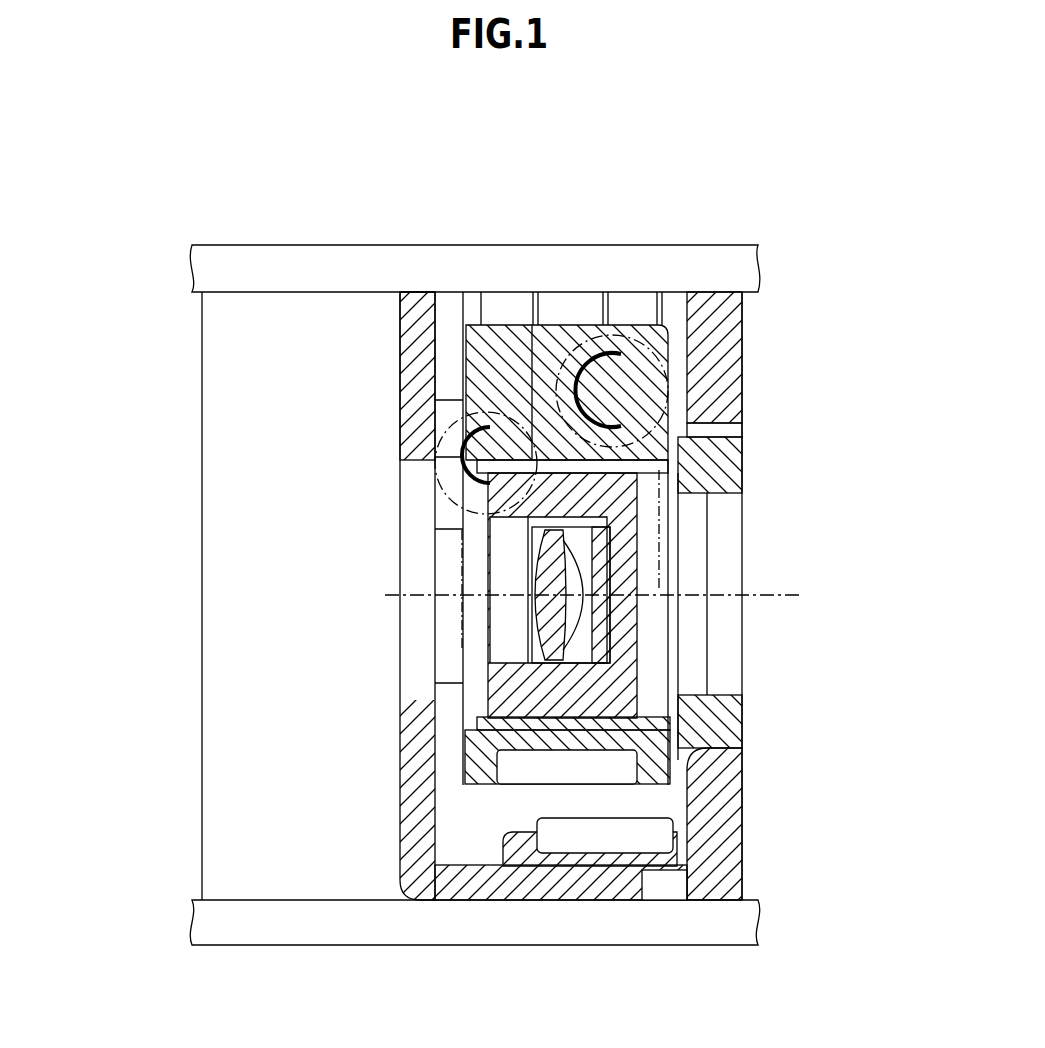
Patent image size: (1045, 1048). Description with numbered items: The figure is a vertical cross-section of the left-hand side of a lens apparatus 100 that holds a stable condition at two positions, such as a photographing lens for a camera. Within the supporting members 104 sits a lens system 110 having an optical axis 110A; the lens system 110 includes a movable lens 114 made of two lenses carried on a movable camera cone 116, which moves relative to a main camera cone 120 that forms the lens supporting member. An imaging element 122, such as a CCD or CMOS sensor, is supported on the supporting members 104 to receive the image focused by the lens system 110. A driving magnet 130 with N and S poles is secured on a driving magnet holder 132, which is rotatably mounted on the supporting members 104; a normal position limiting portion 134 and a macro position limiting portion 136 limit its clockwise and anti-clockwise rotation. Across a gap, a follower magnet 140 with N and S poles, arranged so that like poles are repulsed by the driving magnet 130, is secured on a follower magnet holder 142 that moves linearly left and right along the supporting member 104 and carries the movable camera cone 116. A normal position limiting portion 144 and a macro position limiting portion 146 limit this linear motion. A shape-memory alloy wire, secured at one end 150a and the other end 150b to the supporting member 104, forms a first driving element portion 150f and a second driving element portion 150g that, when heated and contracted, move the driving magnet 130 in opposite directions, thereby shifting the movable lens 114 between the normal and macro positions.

The lens apparatus 100 is at (778, 284).
The supporting members 104 is at (628, 258).
The lens system 110 is at (625, 582).
The optical axis 110A is at (790, 595).
The movable lens 114 is at (690, 505).
The movable camera cone 116 is at (714, 440).
The main camera cone 120 is at (583, 887).
The imaging element 122 is at (296, 348).
The driving magnet 130 is at (612, 837).
The driving magnet holder 132 is at (528, 843).
The normal position limiting portion 134 is at (688, 862).
The macro position limiting portion 136 is at (430, 845).
The follower magnet 140 is at (587, 760).
The follower magnet holder 142 is at (497, 760).
The normal position limiting portion 144 is at (466, 737).
The macro position limiting portion 146 is at (700, 745).
The one end of the alloy wire 150a is at (603, 323).
The other end of the alloy wire 150b is at (462, 426).
The first driving element portion 150f is at (657, 323).
The second driving element portion 150g is at (533, 325).